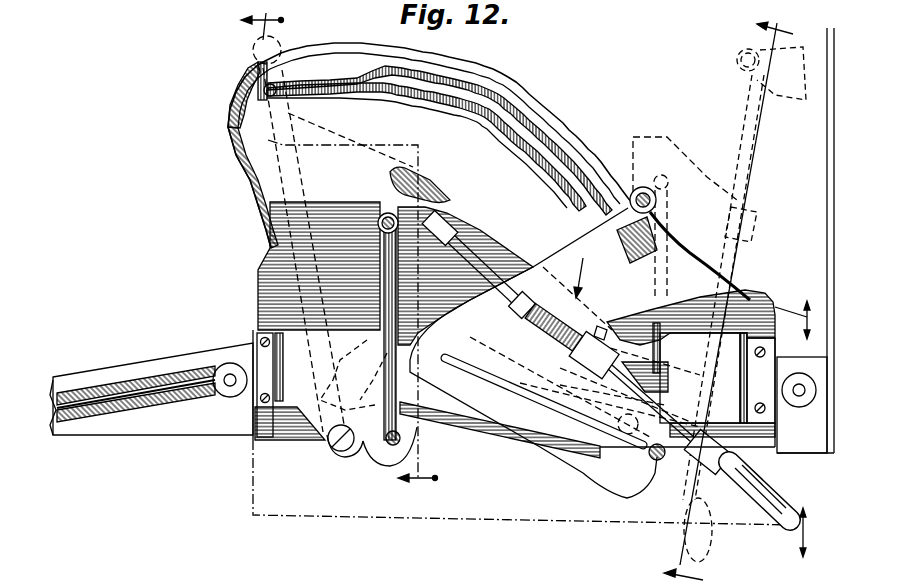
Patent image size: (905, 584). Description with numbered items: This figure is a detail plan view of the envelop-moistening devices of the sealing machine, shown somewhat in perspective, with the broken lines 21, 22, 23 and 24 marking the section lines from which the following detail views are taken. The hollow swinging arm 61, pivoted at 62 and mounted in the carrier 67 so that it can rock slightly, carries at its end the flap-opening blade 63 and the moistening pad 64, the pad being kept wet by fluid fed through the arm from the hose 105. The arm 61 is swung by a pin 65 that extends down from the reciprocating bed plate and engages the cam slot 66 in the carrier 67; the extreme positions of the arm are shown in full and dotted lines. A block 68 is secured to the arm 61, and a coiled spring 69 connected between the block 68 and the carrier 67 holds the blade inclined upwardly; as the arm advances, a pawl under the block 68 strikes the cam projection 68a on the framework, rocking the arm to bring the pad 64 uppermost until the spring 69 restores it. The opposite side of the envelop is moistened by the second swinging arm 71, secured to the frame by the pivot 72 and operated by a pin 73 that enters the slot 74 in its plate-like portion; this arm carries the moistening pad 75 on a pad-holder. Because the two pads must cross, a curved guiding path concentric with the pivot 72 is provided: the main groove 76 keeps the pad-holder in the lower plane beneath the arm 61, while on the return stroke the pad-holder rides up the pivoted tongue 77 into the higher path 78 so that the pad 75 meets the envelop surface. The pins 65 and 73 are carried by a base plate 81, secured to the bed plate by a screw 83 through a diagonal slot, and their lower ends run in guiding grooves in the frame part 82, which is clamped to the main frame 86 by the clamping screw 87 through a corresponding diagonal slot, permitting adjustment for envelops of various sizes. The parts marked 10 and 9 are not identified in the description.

The groove or path 78 is at (490, 76).
The pivoted tongue 77 is at (516, 126).
The main guiding path or groove 76 is at (318, 90).
The frame part 82 is at (255, 284).
The base plate 81 is at (353, 341).
The main frame 86 is at (178, 428).
The broken line 21 21 is at (444, 461).
The clamping screw 87 is at (228, 377).
The moistening pad 64 is at (385, 210).
The flap-opening blade 63 is at (422, 180).
The hollow swinging arm 61 is at (500, 234).
The second swinging arm 71 is at (562, 252).
The moistening pad 75 is at (643, 187).
The cam projection 68a is at (690, 268).
The coiled spring 69 is at (527, 318).
The block 68 is at (577, 363).
The pivot 62 is at (732, 453).
The hose 105 is at (770, 512).
The cam slot 66 is at (503, 381).
The carrier 67 is at (617, 483).
The pin 65 is at (657, 461).
The slot 74 is at (500, 452).
The pivot 72 is at (348, 452).
The pin 73 is at (408, 445).
The hatched block 10 is at (687, 368).
The bracket 9 is at (661, 351).
The screw 83 is at (800, 408).
The broken line 22 22 is at (339, 251).
The broken line 23 23 is at (737, 282).
The broken line 24 24 is at (691, 419).